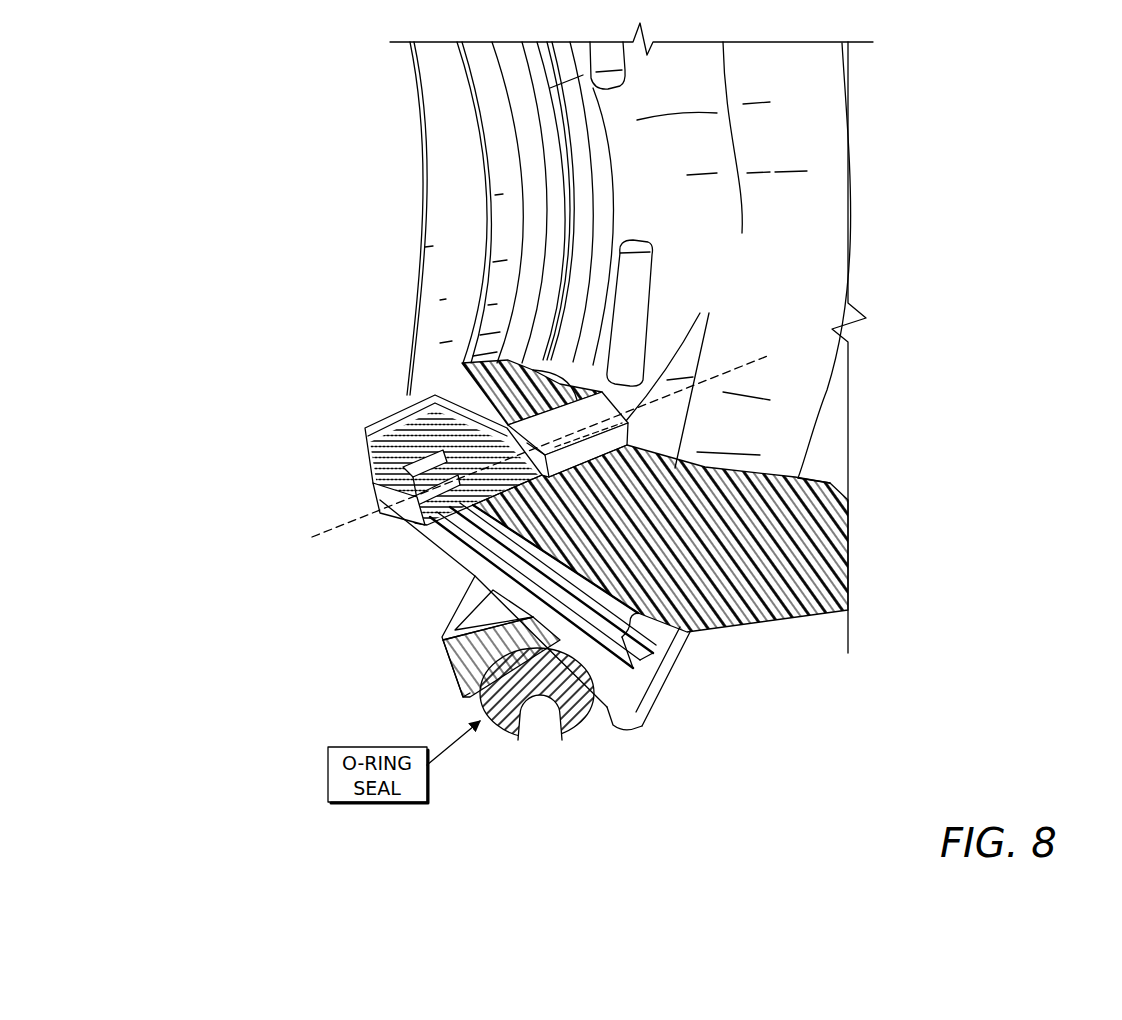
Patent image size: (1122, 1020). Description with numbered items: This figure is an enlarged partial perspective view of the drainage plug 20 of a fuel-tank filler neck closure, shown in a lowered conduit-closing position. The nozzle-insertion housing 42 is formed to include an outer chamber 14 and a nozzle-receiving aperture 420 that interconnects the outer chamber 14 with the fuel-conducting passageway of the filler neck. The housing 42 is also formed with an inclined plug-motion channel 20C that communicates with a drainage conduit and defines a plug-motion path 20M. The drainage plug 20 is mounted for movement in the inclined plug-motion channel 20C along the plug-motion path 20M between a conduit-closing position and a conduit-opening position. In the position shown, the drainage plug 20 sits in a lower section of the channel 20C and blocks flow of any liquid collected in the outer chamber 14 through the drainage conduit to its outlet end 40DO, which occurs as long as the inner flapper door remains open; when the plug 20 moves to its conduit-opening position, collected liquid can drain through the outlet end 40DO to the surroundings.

The drainage plug 20 is at (411, 389).
The inclined plug-motion channel 20C is at (706, 219).
The plug-motion path 20M is at (334, 531).
The outer chamber 14 is at (937, 414).
The nozzle-receiving aperture 420 is at (373, 467).
The nozzle-insertion housing 42 is at (777, 630).
The outlet end 40DO is at (641, 643).